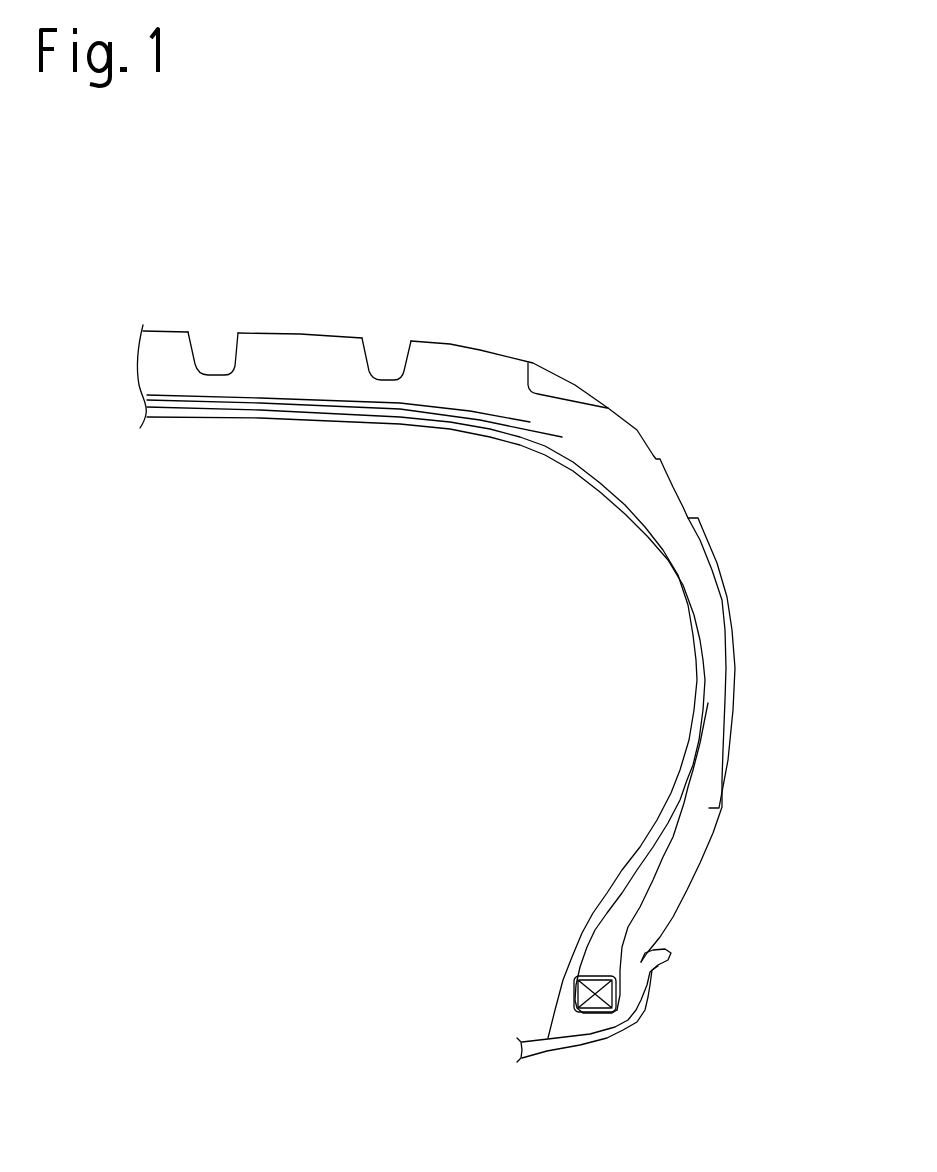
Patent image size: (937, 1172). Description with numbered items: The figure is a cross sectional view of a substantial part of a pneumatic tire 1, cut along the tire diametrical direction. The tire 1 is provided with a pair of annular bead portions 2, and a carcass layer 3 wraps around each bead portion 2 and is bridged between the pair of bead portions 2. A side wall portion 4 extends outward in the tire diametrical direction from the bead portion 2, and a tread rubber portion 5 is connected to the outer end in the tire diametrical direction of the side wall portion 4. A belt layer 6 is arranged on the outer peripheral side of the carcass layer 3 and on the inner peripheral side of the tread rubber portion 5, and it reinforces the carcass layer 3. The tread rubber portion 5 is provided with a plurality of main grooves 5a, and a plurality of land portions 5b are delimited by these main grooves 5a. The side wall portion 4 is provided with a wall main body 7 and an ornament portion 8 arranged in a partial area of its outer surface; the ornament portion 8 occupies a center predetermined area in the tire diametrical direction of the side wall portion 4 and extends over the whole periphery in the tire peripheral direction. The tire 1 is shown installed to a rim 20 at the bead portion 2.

The pneumatic tire 1 is at (744, 221).
The bead portion 2 is at (571, 993).
The carcass layer 3 is at (679, 566).
The side wall portion 4 is at (767, 468).
The tread rubber portion 5 is at (256, 231).
The main groove 5a is at (212, 338).
The land portion 5b is at (300, 326).
The belt layer 6 is at (296, 404).
The wall main body 7 is at (678, 490).
The ornament portion 8 is at (729, 599).
The rim 20 is at (627, 1032).